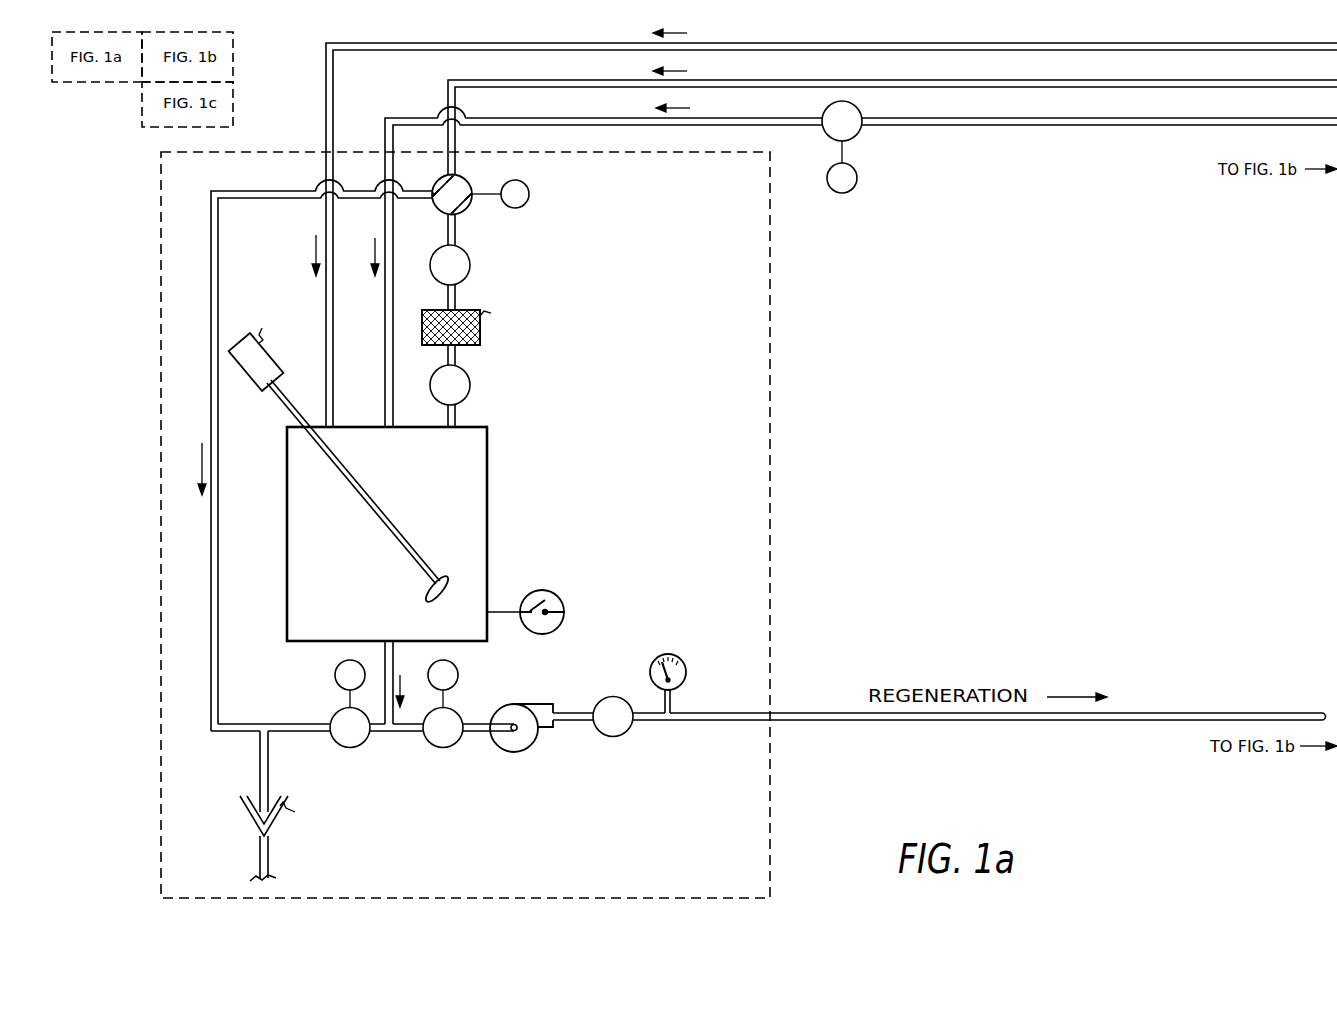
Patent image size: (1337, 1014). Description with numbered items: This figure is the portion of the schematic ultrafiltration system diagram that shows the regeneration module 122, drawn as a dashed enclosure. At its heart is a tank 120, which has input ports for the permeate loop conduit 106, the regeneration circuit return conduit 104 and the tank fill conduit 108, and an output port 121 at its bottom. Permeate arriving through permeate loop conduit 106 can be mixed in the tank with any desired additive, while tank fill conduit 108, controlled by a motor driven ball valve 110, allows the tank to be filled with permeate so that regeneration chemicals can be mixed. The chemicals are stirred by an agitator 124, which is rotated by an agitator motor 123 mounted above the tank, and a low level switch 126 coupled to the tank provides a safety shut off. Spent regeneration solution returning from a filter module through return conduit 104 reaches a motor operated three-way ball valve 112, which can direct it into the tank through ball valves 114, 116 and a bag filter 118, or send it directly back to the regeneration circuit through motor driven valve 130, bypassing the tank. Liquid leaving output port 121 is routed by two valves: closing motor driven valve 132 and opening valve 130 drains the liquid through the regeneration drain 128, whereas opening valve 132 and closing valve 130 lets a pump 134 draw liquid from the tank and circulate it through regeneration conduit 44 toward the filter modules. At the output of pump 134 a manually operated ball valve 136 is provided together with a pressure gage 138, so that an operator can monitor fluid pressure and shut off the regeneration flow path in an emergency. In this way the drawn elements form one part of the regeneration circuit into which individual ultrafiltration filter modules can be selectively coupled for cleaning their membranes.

The permeate loop conduit 106 is at (1328, 42).
The regeneration circuit return conduit 104 is at (1328, 79).
The tank fill conduit 108 is at (1328, 119).
The motor driven ball valve 110 is at (860, 134).
The motor operated three-way ball valve 112 is at (471, 205).
The ball valve 114 is at (470, 260).
The ball valve 116 is at (470, 383).
The bag filter 118 is at (481, 335).
The tank 120 is at (490, 479).
The output port 121 is at (398, 658).
The regeneration module 122 is at (771, 424).
The agitator motor 123 is at (250, 378).
The agitator 124 is at (446, 580).
The low level switch 126 is at (556, 597).
The regeneration drain 128 is at (246, 820).
The motor driven valve 130 is at (341, 747).
The motor driven valve 132 is at (432, 747).
The pump 134 is at (512, 752).
The manually operated ball valve 136 is at (613, 737).
The pressure gage 138 is at (681, 659).
The regeneration conduit 44 is at (1318, 712).